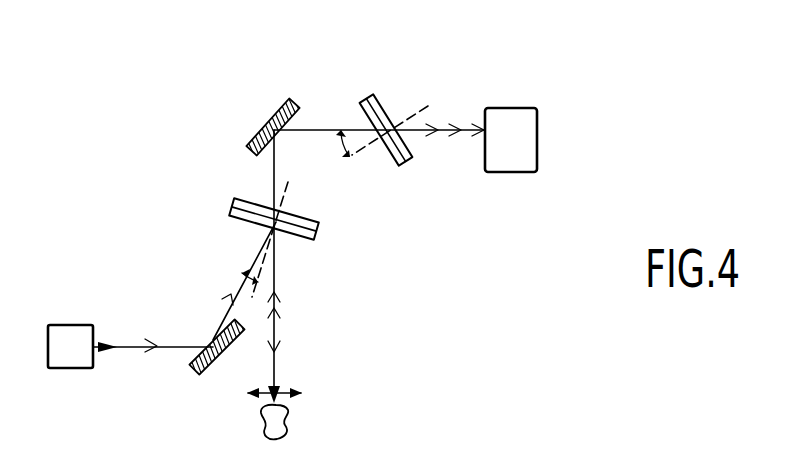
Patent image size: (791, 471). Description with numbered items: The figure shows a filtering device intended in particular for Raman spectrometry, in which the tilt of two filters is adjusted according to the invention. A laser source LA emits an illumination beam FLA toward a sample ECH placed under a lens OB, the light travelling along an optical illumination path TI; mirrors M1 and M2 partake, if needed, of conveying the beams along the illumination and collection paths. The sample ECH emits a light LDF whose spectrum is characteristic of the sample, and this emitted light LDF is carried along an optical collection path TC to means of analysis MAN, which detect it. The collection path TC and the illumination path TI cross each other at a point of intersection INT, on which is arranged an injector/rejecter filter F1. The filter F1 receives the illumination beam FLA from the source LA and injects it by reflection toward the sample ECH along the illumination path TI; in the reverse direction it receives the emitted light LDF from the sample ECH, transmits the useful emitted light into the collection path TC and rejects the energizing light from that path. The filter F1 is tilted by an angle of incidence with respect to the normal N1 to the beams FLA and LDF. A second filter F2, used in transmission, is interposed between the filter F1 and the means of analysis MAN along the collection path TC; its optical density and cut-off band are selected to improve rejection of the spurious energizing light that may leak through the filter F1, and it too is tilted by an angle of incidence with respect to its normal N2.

The laser source LA is at (67, 325).
The illumination beam FLA is at (152, 349).
The mirror M1 is at (203, 370).
The optical illumination path TI is at (203, 308).
The injector/rejecter filter F1 is at (230, 210).
The point of intersection INT is at (267, 208).
The normal N1 is at (263, 263).
The emitted light LDF is at (278, 302).
The lens OB is at (300, 390).
The sample ECH is at (287, 424).
The mirror M2 is at (280, 106).
The optical collection path TC is at (302, 137).
The second filter F2 is at (368, 93).
The normal N2 is at (363, 148).
The means of analysis MAN is at (537, 138).